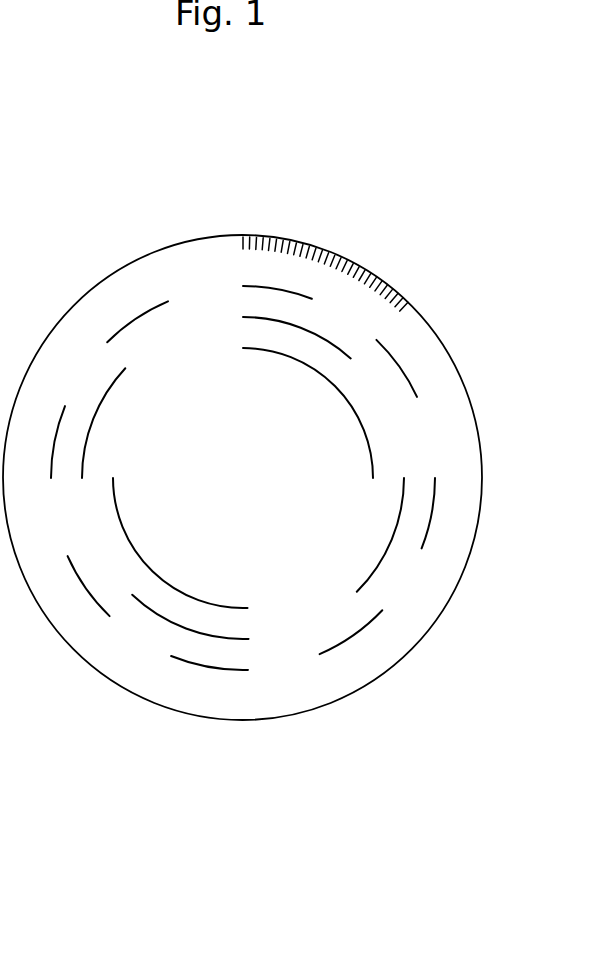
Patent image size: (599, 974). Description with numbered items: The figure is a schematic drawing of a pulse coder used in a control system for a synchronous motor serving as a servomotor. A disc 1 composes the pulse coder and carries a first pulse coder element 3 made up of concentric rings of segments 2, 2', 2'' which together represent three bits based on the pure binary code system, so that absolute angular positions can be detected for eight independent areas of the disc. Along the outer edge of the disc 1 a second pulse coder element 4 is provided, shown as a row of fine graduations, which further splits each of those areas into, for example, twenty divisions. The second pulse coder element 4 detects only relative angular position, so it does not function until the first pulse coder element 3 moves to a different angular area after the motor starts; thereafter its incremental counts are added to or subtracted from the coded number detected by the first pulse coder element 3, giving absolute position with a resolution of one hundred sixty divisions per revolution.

The disc 1 is at (462, 448).
The segment 2 is at (243, 505).
The segment 2' is at (284, 482).
The segment 2'' is at (243, 553).
The first pulse coder element 3 is at (145, 637).
The second pulse coder element 4 is at (320, 247).